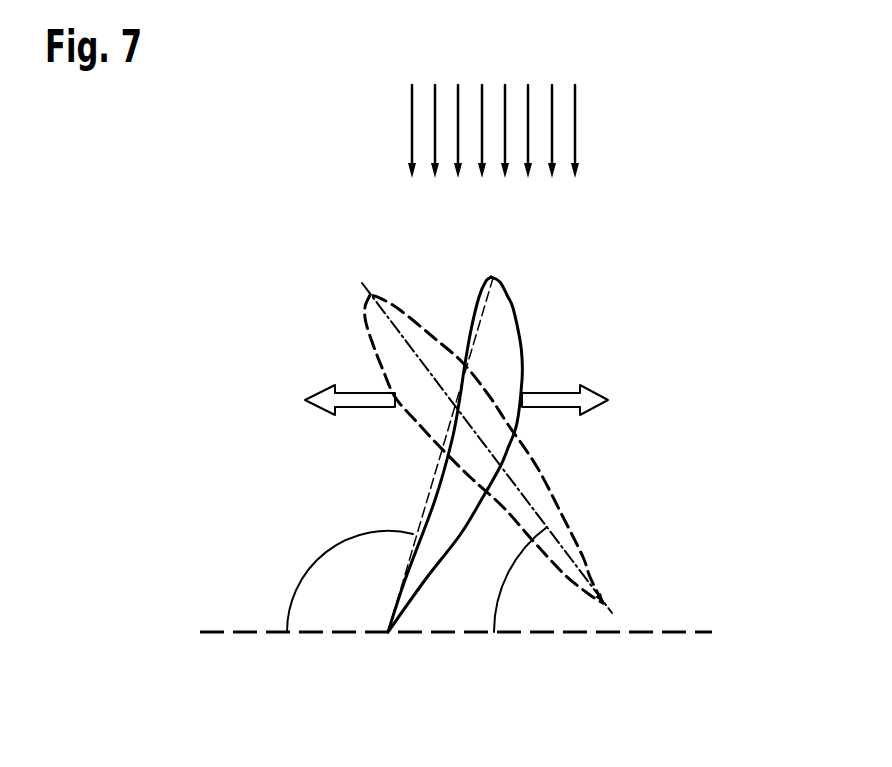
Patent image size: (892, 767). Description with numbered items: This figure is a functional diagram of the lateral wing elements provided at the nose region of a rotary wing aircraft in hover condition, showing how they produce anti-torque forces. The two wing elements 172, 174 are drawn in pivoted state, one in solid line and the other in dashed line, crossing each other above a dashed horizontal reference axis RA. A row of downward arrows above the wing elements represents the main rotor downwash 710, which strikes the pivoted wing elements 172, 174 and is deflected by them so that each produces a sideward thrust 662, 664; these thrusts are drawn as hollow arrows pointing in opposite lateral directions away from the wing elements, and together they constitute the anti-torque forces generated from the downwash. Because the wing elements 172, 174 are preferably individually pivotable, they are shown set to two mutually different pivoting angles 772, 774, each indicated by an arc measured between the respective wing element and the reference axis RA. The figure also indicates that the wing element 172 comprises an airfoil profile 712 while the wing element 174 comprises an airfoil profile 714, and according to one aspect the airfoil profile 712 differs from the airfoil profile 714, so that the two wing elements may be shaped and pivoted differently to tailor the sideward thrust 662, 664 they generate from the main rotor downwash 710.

The main rotor downwash 710 is at (577, 120).
The wing element 172 is at (506, 452).
The wing element 174 is at (427, 448).
The airfoil profile 712 is at (522, 358).
The airfoil profile 714 is at (378, 372).
The sideward thrust 662 is at (552, 408).
The sideward thrust 664 is at (358, 408).
The pivoting angle 772 is at (327, 550).
The pivoting angle 774 is at (503, 581).
The reference axis RA is at (702, 627).